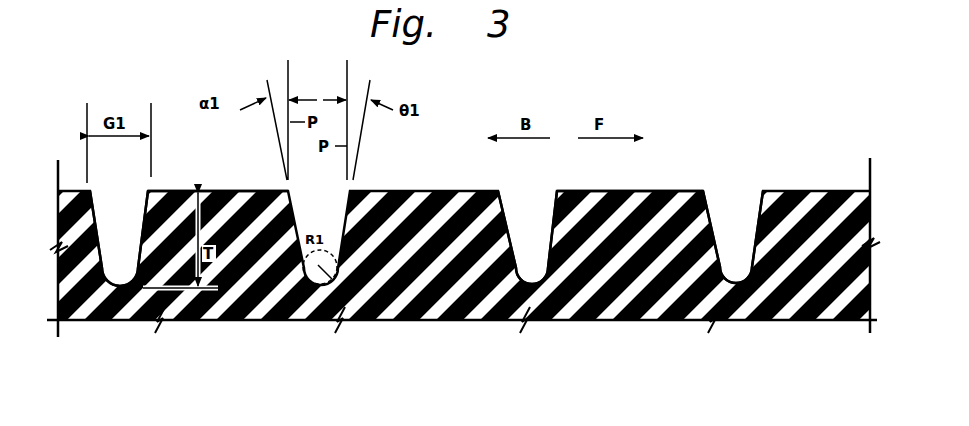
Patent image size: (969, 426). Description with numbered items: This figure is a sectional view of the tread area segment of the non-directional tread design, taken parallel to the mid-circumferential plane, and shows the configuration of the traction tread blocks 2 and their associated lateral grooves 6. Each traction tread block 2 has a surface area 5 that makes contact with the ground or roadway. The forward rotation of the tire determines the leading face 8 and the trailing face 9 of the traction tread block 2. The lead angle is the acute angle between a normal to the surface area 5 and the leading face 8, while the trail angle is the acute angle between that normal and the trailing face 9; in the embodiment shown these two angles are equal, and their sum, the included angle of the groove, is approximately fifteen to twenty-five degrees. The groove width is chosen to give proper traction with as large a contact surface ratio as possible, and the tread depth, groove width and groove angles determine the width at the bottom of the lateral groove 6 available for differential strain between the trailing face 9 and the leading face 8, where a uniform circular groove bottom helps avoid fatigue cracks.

The traction tread block 2 is at (650, 270).
The surface area 5 is at (250, 191).
The lateral groove 6 is at (119, 238).
The leading face 8 is at (713, 212).
The trailing face 9 is at (549, 212).